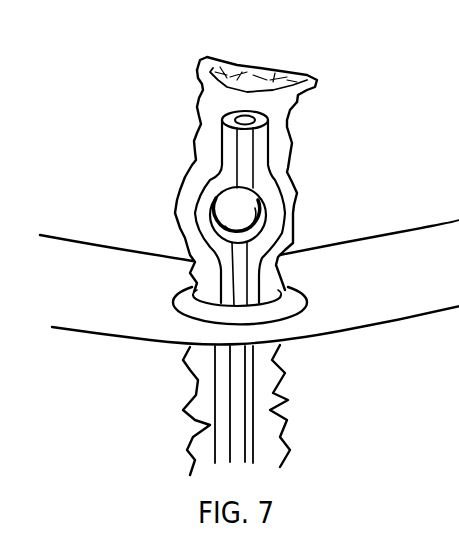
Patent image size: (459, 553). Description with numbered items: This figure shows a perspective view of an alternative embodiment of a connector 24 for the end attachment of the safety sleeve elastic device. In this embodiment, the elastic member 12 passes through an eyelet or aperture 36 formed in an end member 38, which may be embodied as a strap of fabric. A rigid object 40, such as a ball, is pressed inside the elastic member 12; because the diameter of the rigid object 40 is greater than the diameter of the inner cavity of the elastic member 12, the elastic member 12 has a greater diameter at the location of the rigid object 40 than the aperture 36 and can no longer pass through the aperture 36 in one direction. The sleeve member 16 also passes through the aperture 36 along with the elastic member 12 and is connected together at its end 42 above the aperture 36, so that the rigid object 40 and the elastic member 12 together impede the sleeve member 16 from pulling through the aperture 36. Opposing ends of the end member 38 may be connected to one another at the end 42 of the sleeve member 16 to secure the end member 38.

The elastic member 12 is at (270, 187).
The sleeve member 16 is at (287, 157).
The connector 24 is at (133, 137).
The aperture 36 is at (281, 288).
The end member 38 is at (114, 303).
The rigid object 40 is at (240, 212).
The end 42 is at (300, 64).